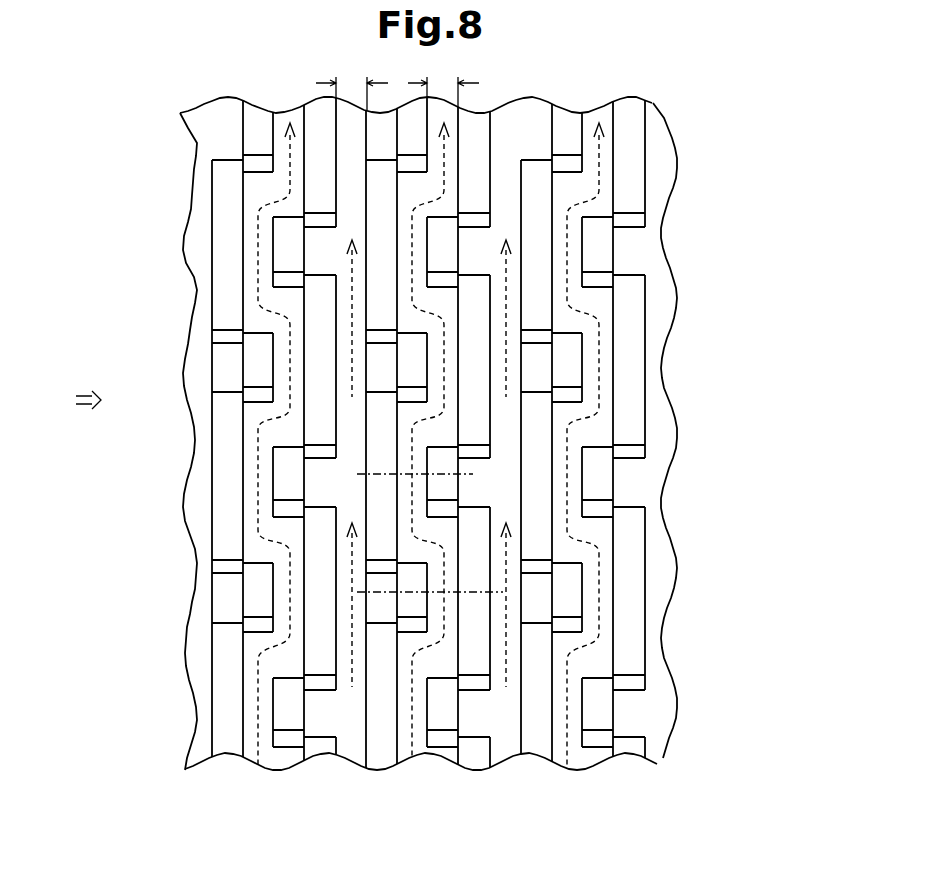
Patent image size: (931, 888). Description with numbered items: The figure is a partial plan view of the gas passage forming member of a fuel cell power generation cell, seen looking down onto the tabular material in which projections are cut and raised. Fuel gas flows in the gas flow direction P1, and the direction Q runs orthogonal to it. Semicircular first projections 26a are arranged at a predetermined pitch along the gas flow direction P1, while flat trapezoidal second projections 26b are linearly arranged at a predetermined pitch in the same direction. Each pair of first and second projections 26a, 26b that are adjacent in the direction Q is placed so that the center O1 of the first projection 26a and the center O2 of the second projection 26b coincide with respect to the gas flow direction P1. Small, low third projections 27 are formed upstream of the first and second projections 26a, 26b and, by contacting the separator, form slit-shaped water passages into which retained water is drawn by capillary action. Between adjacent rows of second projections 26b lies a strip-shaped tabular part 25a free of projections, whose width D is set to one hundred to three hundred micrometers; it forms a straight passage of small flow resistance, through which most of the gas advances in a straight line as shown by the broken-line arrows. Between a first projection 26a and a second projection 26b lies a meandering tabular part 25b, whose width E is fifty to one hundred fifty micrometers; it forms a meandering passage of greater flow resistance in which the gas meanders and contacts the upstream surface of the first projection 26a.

The strip-shaped tabular part 25a is at (352, 747).
The meandering tabular part 25b is at (251, 754).
The first projection 26a is at (252, 130).
The second projection 26b is at (226, 187).
The third projection 27 is at (633, 217).
The center of the first projection O1 is at (446, 476).
The center of the second projection O2 is at (420, 602).
The gas flow direction P1 is at (413, 797).
The width of the strip-shaped tabular part D is at (352, 82).
The width of the tabular part E is at (443, 81).
The direction orthogonal to the gas flow direction Q is at (76, 400).